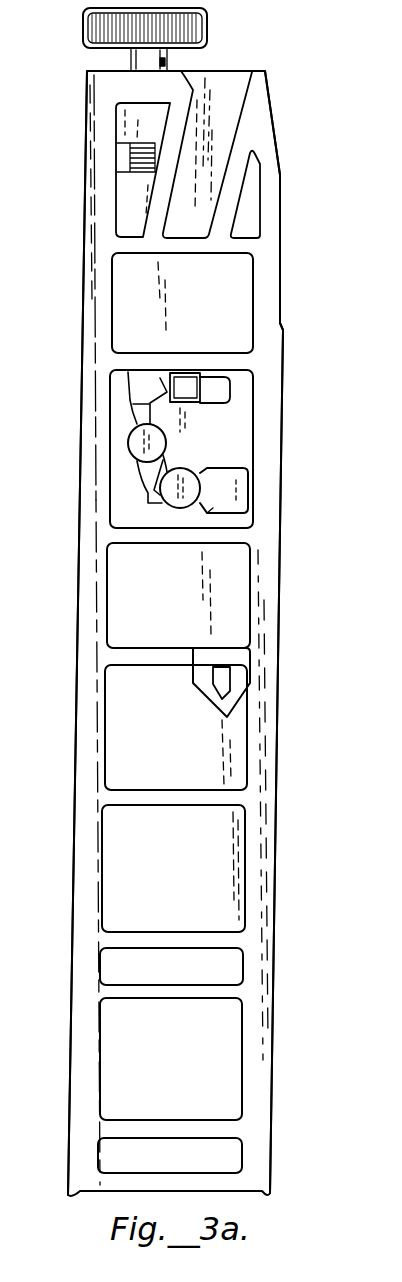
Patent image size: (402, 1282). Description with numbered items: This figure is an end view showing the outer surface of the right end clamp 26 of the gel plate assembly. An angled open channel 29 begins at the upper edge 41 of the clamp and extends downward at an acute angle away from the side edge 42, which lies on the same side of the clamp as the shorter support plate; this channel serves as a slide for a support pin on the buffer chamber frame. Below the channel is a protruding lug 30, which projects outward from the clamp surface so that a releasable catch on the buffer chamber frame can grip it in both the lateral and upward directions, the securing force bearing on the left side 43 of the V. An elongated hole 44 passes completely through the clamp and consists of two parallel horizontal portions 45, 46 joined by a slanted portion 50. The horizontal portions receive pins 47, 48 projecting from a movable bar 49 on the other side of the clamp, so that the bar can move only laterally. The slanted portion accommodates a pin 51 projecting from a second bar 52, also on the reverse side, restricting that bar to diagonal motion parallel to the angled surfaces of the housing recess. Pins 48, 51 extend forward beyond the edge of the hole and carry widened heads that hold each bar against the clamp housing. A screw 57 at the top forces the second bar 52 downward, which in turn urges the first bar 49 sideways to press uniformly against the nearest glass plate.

The right end clamp 26 is at (85, 230).
The angled open channel 29 is at (217, 100).
The protruding lug 30 is at (233, 697).
The upper edge 41 is at (212, 71).
The side edge 42 is at (282, 246).
The left side of the V 43 is at (210, 702).
The elongated hole 44 is at (145, 495).
The horizontal portion 45 is at (215, 390).
The horizontal portion 46 is at (232, 492).
The pin 47 is at (186, 387).
The pin 48 is at (188, 466).
The movable bar 49 is at (210, 500).
The slanted portion 50 is at (167, 457).
The pin 51 is at (127, 443).
The second bar 52 is at (160, 393).
The screw 57 is at (82, 26).